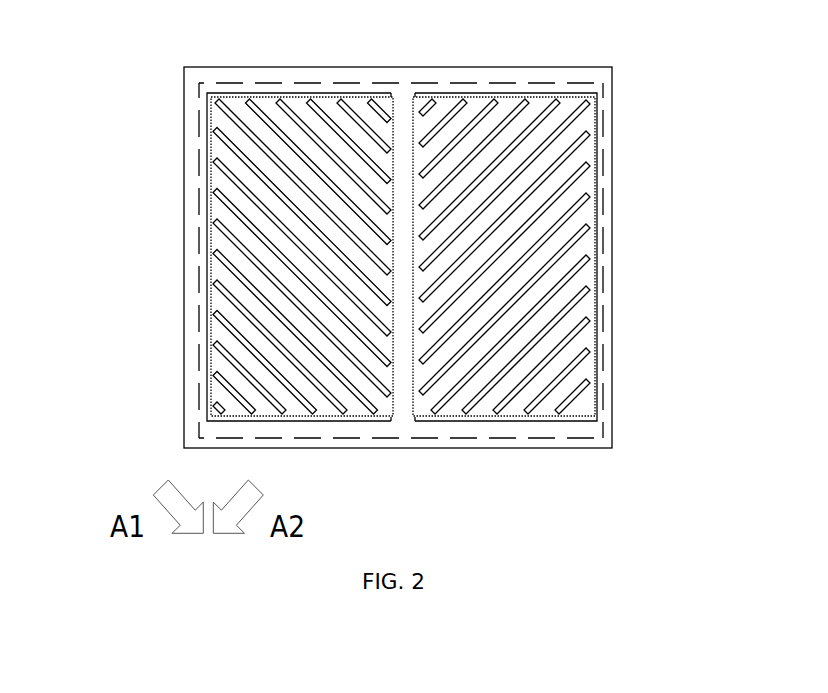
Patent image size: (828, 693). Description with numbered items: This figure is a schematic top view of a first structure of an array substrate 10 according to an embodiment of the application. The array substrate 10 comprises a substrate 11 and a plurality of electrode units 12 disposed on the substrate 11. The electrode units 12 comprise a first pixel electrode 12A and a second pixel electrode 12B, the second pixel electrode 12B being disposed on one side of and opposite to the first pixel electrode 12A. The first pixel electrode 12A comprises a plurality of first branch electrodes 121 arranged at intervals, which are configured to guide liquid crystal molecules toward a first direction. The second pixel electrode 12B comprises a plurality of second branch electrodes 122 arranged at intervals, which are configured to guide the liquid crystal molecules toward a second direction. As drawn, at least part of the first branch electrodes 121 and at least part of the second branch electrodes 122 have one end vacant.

The array substrate 10 is at (116, 47).
The substrate 11 is at (592, 76).
The electrode units 12 is at (189, 143).
The first pixel electrode 12A is at (214, 257).
The second pixel electrode 12B is at (587, 257).
The first branch electrodes 121 is at (260, 239).
The second branch electrodes 122 is at (586, 231).